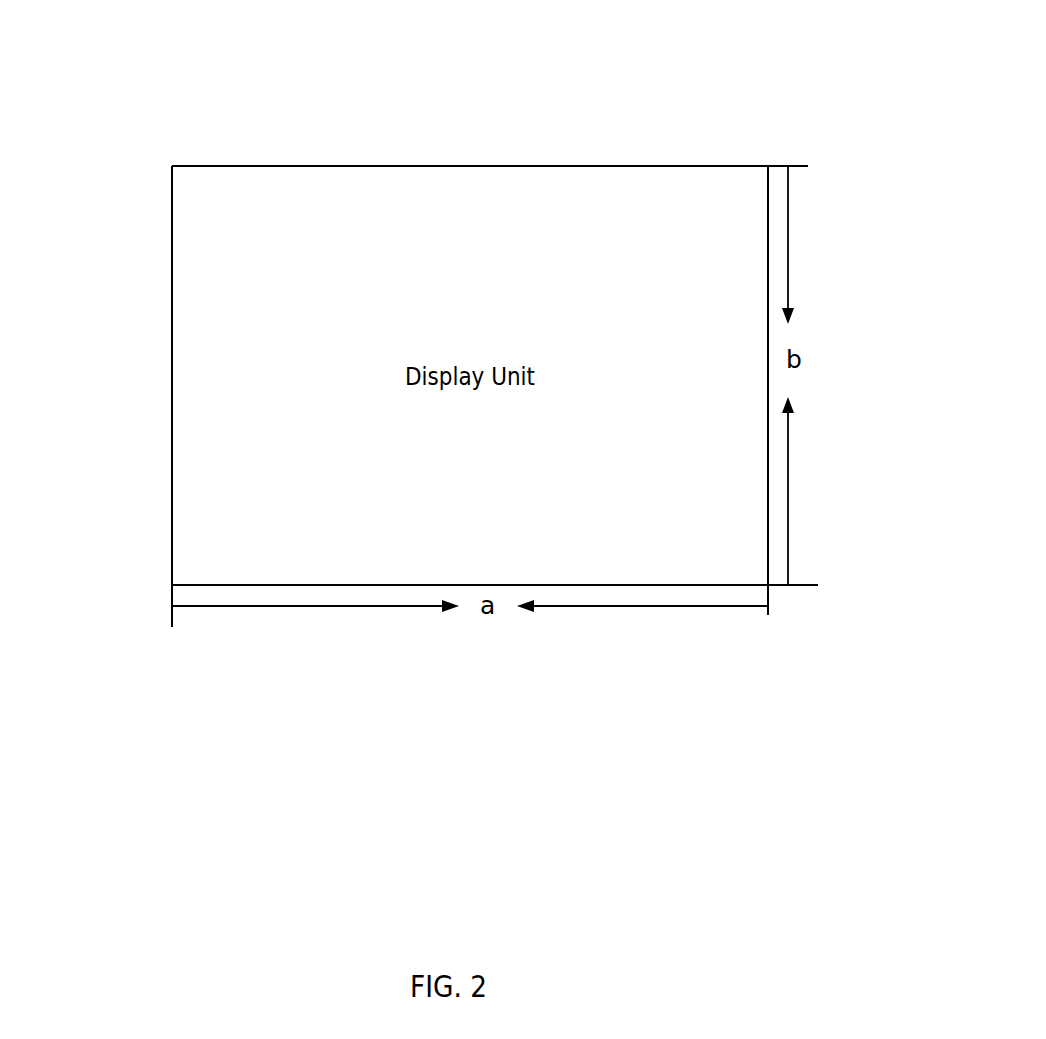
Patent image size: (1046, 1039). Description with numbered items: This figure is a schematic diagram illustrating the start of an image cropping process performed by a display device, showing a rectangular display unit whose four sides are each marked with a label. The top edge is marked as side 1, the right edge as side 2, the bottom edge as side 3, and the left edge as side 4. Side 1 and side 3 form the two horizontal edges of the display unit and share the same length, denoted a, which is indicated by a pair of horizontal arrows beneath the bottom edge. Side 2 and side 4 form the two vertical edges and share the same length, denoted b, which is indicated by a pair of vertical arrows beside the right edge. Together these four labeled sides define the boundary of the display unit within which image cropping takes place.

The side 1 is at (423, 166).
The side 2 is at (768, 288).
The side 3 is at (363, 585).
The side 4 is at (172, 423).